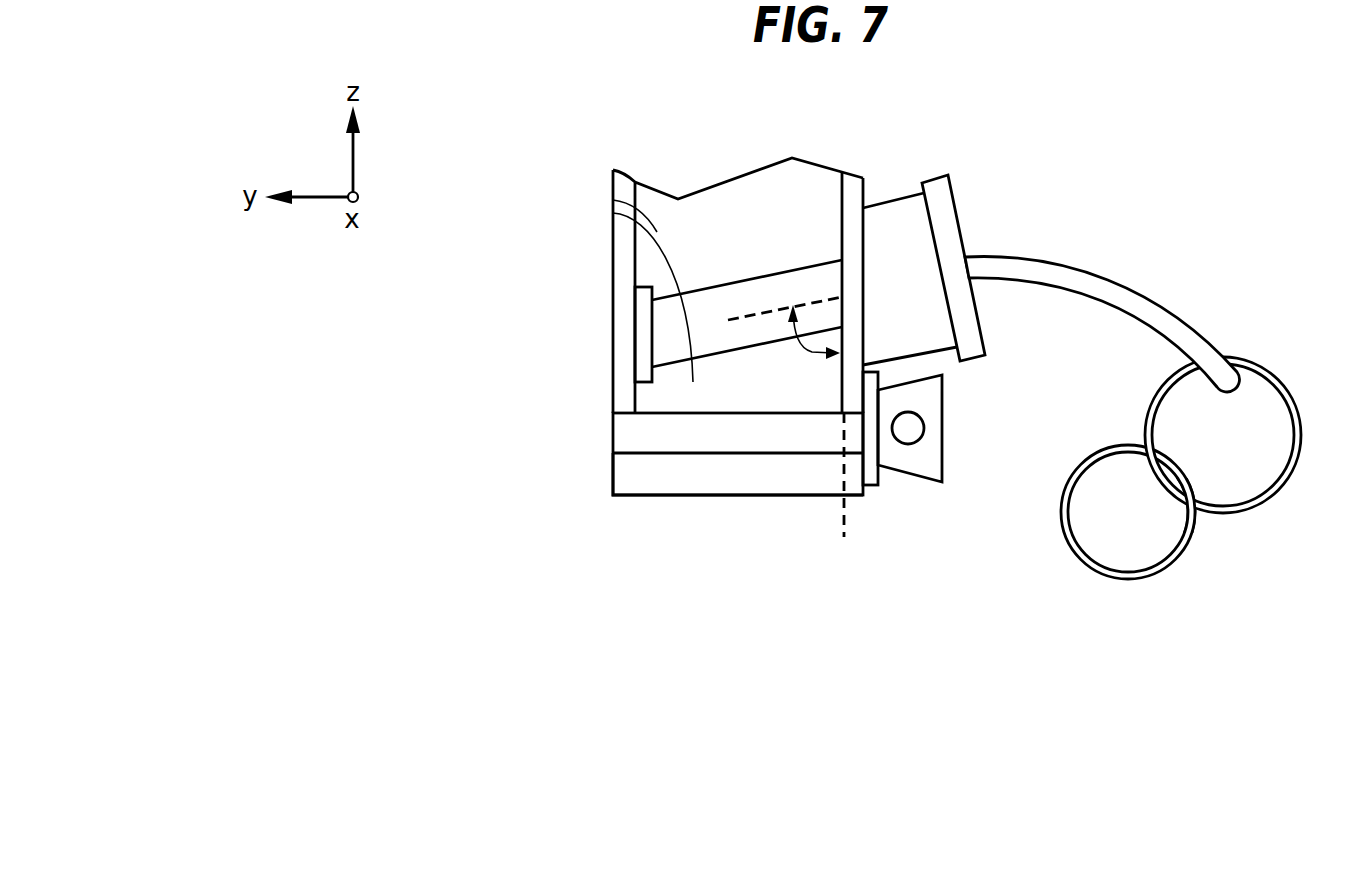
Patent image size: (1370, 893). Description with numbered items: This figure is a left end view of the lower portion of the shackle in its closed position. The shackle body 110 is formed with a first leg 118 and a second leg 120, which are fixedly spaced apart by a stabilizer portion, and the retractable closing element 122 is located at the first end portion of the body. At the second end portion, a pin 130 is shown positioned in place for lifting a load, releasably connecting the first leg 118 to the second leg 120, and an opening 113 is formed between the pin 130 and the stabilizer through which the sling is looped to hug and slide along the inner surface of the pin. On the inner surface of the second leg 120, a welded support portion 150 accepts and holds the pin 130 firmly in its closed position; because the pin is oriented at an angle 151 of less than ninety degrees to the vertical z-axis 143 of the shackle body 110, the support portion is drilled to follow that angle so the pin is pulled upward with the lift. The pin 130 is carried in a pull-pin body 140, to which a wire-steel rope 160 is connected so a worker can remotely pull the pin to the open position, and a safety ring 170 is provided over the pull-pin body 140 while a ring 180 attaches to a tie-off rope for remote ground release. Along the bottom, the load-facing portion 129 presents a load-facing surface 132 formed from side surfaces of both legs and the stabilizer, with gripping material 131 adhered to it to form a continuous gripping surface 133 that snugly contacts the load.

The shackle body 110 is at (598, 399).
The opening 113 is at (613, 213).
The first leg 118 is at (850, 183).
The second leg 120 is at (618, 265).
The retractable closing element 122 is at (933, 462).
The load-facing portion 129 is at (600, 442).
The pin 130 is at (758, 275).
The gripping material 131 is at (623, 480).
The load-facing surface 132 is at (672, 455).
The gripping surface 133 is at (709, 495).
The pull-pin body 140 is at (900, 207).
The z-axis 143 is at (846, 507).
The welded support portion 150 is at (642, 335).
The angle 151 is at (799, 348).
The wire-steel rope 160 is at (1105, 283).
The safety ring 170 is at (1223, 513).
The ring 180 is at (1125, 577).